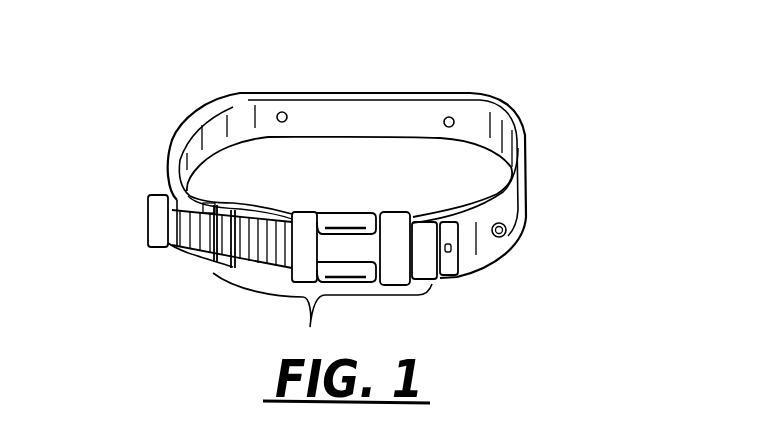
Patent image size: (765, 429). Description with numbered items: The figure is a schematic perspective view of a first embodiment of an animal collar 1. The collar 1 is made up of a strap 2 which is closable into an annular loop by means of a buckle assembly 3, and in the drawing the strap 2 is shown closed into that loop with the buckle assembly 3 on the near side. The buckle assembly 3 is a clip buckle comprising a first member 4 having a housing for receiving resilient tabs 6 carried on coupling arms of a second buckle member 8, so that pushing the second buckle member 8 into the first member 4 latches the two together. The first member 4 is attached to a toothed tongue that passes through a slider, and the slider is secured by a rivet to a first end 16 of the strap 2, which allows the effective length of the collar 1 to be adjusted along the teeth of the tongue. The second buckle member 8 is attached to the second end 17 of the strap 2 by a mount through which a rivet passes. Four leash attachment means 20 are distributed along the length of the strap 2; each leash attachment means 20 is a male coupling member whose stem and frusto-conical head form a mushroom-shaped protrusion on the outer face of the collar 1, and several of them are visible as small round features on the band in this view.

The collar 1 is at (418, 74).
The strap 2 is at (522, 204).
The buckle assembly 3 is at (300, 329).
The first member 4 is at (393, 225).
The resilient tabs 6 is at (360, 224).
The second buckle member 8 is at (425, 230).
The first end 16 is at (224, 184).
The second end 17 is at (465, 294).
The leash attachment means 20 is at (280, 112).